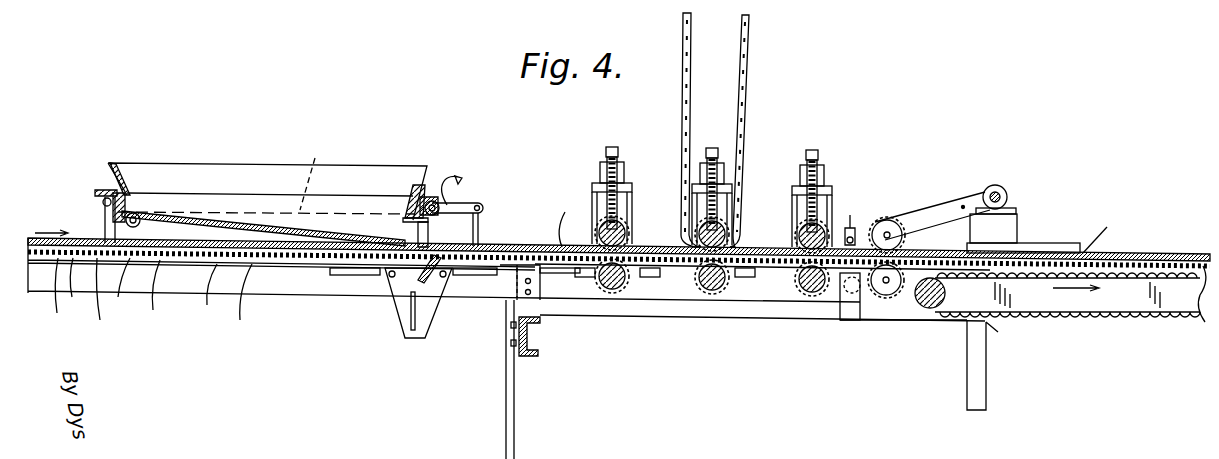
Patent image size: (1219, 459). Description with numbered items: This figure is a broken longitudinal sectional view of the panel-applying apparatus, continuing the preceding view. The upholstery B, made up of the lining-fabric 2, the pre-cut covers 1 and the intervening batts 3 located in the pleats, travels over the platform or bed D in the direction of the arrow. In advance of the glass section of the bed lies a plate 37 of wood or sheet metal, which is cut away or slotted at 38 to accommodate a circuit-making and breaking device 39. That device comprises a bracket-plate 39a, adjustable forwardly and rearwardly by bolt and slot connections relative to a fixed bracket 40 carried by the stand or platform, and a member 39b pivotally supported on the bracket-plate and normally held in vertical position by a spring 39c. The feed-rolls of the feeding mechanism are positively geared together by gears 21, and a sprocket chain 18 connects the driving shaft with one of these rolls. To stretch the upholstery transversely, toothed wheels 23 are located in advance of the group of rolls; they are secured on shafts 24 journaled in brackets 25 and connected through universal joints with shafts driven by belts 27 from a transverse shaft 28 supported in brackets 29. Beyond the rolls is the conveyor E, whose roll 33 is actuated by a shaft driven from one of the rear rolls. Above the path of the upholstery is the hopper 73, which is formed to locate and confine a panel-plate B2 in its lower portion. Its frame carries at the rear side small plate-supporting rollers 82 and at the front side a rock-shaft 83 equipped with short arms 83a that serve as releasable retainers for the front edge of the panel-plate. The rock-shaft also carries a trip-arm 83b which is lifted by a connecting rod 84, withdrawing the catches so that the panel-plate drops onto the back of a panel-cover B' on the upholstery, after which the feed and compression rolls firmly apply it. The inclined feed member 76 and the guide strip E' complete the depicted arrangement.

The pre-cut covers 1 is at (98, 288).
The lining-fabric 2 is at (1142, 263).
The batts 3 is at (102, 297).
The sprocket chain 18 is at (752, 69).
The gears 21 is at (635, 236).
The toothed wheels 23 is at (883, 222).
The shafts 24 is at (890, 232).
The brackets 25 is at (843, 307).
The belts 27 is at (945, 190).
The transverse shaft 28 is at (1001, 194).
The brackets 29 is at (1008, 228).
The roll 33 is at (923, 310).
The plate 37 is at (237, 302).
The slot 38 is at (360, 264).
The circuit-making and breaking device 39 is at (440, 304).
The bracket-plate 39a is at (412, 278).
The pivoted member 39b is at (411, 312).
The spring 39c is at (434, 280).
The fixed bracket 40 is at (333, 277).
The hopper 73 is at (228, 155).
The inclined feed plate 76 is at (480, 202).
The plate-supporting rollers 82 is at (125, 218).
The rock-shaft 83 is at (485, 210).
The short arms 83a is at (403, 222).
The trip-arm 83b is at (447, 200).
The connecting rod 84 is at (481, 233).
The upholstery B is at (93, 299).
The panel-plates B2 is at (623, 196).
The panel-covers B' is at (1070, 311).
The platform D is at (205, 294).
The conveyor E is at (929, 187).
The guide strip end E' is at (785, 144).